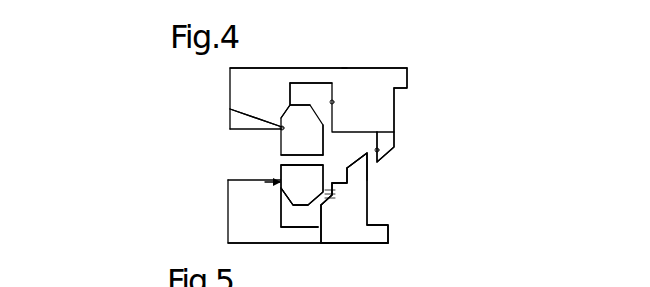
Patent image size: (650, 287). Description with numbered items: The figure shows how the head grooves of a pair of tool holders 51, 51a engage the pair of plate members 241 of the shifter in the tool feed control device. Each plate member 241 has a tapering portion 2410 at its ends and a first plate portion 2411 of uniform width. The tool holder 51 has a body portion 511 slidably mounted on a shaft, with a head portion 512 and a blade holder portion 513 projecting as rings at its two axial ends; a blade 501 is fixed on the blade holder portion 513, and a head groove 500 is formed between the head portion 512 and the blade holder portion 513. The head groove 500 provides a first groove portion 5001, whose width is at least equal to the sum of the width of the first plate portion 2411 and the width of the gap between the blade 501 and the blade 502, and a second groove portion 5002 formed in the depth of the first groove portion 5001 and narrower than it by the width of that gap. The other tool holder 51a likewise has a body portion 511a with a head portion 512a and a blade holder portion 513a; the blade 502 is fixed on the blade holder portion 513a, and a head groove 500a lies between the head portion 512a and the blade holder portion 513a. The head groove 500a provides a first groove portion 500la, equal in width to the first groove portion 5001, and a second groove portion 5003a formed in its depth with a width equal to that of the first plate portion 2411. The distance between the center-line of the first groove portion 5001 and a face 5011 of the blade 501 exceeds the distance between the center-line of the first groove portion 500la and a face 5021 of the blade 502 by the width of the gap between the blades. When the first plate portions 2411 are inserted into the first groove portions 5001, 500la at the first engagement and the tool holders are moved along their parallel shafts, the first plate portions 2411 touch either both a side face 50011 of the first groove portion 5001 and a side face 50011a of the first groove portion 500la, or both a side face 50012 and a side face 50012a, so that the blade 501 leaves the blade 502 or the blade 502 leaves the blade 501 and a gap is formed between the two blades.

The tool holder 51 is at (190, 77).
The tool holder 51a is at (190, 215).
The head groove 500 is at (366, 64).
The head groove 500a is at (289, 217).
The first groove portion 5001 is at (350, 105).
The second groove portion 5002 is at (300, 104).
The side face 50011 is at (300, 84).
The side face 50011a is at (282, 172).
The side face 50012 is at (388, 86).
The side face 50012a is at (360, 243).
The second groove portion 5003a is at (344, 243).
The blade 501 is at (365, 118).
The face of blade 5011 is at (326, 167).
The blade 502 is at (380, 226).
The face of blade 5021 is at (325, 143).
The body portion 511 is at (322, 100).
The body portion 511a is at (292, 243).
The head portion 512 is at (282, 128).
The head portion 512a is at (282, 190).
The blade holder portion 513 is at (394, 120).
The blade holder portion 513a is at (345, 190).
The plate member 241 is at (396, 133).
The tapering portion 2410 is at (335, 240).
The first plate portion 2411 is at (281, 152).
The first groove portion 500la is at (367, 220).